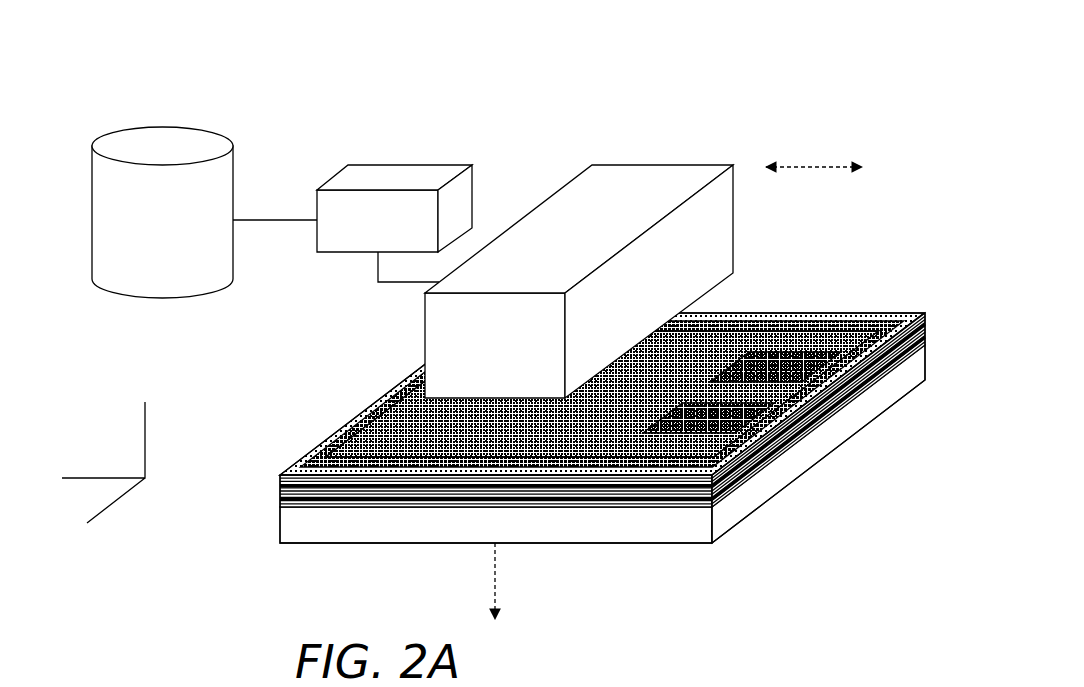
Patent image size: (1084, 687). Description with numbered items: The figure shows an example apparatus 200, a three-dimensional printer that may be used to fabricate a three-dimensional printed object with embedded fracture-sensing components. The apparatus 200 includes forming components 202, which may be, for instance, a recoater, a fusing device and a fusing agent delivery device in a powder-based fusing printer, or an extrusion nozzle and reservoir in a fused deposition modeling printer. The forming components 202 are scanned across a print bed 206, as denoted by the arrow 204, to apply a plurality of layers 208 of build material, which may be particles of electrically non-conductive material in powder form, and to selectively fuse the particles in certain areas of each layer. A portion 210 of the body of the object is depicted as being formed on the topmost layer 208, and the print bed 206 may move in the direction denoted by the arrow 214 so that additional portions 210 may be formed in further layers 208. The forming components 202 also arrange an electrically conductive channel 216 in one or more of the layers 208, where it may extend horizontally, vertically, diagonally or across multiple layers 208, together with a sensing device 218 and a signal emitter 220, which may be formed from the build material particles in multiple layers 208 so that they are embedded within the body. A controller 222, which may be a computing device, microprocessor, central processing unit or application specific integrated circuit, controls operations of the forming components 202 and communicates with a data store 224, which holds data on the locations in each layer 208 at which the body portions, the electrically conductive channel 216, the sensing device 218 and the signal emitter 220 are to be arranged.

The apparatus 200 is at (276, 59).
The forming components 202 is at (617, 165).
The arrow 204 is at (815, 167).
The print bed 206 is at (280, 533).
The layers 208 is at (280, 492).
The portion of the body 210 is at (750, 312).
The arrow 214 is at (495, 573).
The electrically conductive channel 216 is at (857, 313).
The sensing device 218 is at (753, 420).
The signal emitter 220 is at (837, 358).
The controller 222 is at (423, 165).
The data store 224 is at (182, 268).